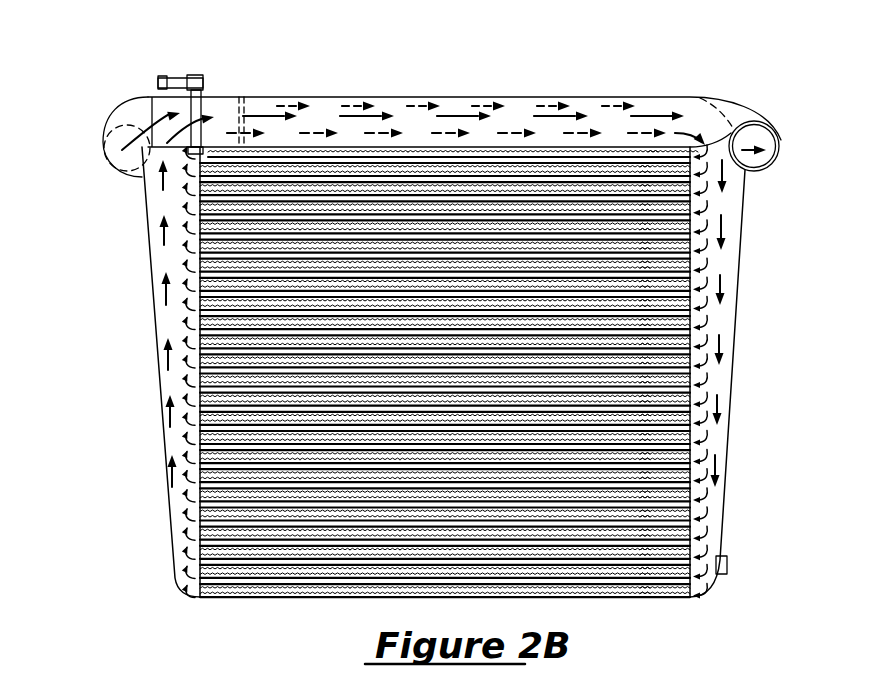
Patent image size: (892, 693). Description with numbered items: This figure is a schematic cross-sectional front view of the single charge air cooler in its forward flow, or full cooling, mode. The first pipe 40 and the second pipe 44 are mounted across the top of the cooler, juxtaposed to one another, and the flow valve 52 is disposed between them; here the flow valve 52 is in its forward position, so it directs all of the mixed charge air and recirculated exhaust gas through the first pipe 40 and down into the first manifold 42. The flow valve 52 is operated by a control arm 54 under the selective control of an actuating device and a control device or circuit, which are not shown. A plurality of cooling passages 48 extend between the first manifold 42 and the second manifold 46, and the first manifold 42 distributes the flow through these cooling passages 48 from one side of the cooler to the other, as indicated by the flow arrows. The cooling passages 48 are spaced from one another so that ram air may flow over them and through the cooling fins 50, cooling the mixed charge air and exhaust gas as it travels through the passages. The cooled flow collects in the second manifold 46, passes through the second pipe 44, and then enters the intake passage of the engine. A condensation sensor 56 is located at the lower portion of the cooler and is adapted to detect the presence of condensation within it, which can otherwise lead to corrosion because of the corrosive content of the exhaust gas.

The first pipe 40 is at (103, 143).
The first manifold 42 is at (740, 310).
The second pipe 44 is at (778, 147).
The second manifold 46 is at (150, 307).
The cooling passages 48 is at (165, 558).
The cooling fins 50 is at (200, 440).
The flow valve 52 is at (219, 104).
The control arm 54 is at (176, 77).
The condensation sensor 56 is at (740, 558).